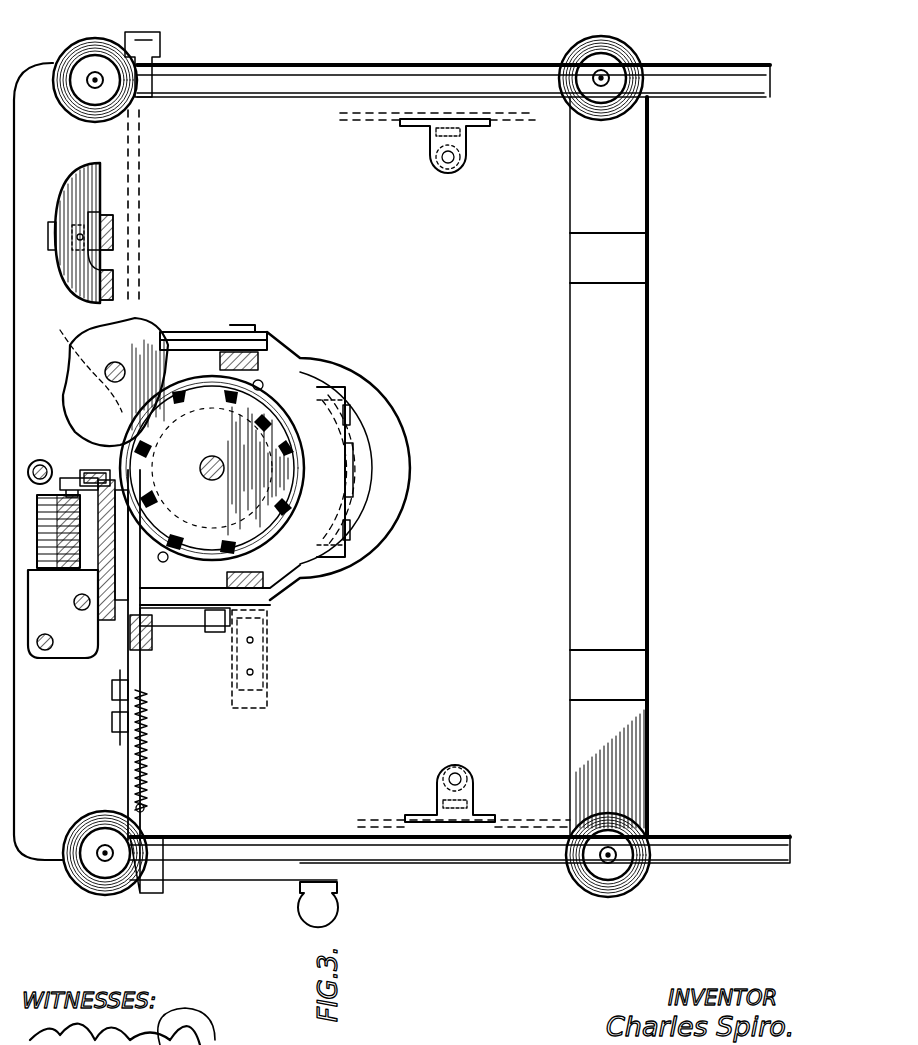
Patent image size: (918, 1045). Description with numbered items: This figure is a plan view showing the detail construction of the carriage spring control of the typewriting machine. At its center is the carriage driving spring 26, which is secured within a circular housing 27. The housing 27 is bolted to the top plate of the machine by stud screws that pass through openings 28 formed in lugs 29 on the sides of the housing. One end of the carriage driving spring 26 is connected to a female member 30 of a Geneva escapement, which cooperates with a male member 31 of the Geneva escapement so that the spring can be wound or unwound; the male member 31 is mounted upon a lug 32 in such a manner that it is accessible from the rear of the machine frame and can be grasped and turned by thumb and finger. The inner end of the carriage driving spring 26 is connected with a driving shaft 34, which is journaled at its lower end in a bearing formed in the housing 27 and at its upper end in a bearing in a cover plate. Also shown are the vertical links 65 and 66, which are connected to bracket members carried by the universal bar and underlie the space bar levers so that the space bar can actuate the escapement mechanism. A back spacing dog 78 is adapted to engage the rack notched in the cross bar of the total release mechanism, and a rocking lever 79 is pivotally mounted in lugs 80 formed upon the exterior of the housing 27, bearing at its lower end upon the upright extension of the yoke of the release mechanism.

The carriage driving spring 26 is at (70, 478).
The circular housing 27 is at (102, 470).
The openings 28 is at (265, 386).
The lugs 29 is at (240, 368).
The female member of the Geneva escapement 30 is at (212, 468).
The male member of the Geneva escapement 31 is at (104, 374).
The lug 32 is at (75, 335).
The driving shaft 34 is at (210, 481).
The vertical link 65 is at (432, 125).
The vertical link 66 is at (425, 815).
The back spacing dog 78 is at (128, 660).
The rocking lever 79 is at (42, 460).
The lugs 80 is at (98, 508).